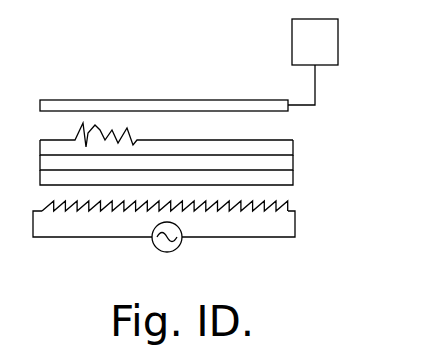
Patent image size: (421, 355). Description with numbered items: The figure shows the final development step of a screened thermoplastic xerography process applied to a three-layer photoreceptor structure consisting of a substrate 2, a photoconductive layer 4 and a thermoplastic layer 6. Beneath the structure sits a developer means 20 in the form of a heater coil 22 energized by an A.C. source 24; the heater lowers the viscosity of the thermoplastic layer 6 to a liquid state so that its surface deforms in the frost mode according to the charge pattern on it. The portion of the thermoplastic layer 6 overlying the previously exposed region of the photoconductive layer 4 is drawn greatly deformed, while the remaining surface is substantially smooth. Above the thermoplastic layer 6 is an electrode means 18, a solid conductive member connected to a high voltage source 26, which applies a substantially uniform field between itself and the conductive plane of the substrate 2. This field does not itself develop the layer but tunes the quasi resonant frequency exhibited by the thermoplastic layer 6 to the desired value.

The substrate 2 is at (293, 177).
The photoconductive layer 4 is at (293, 162).
The thermoplastic layer 6 is at (188, 139).
The electrode means 18 is at (243, 100).
The developer means 20 is at (191, 239).
The heater coil 22 is at (80, 206).
The A.C. source 24 is at (178, 248).
The high voltage source 26 is at (292, 48).